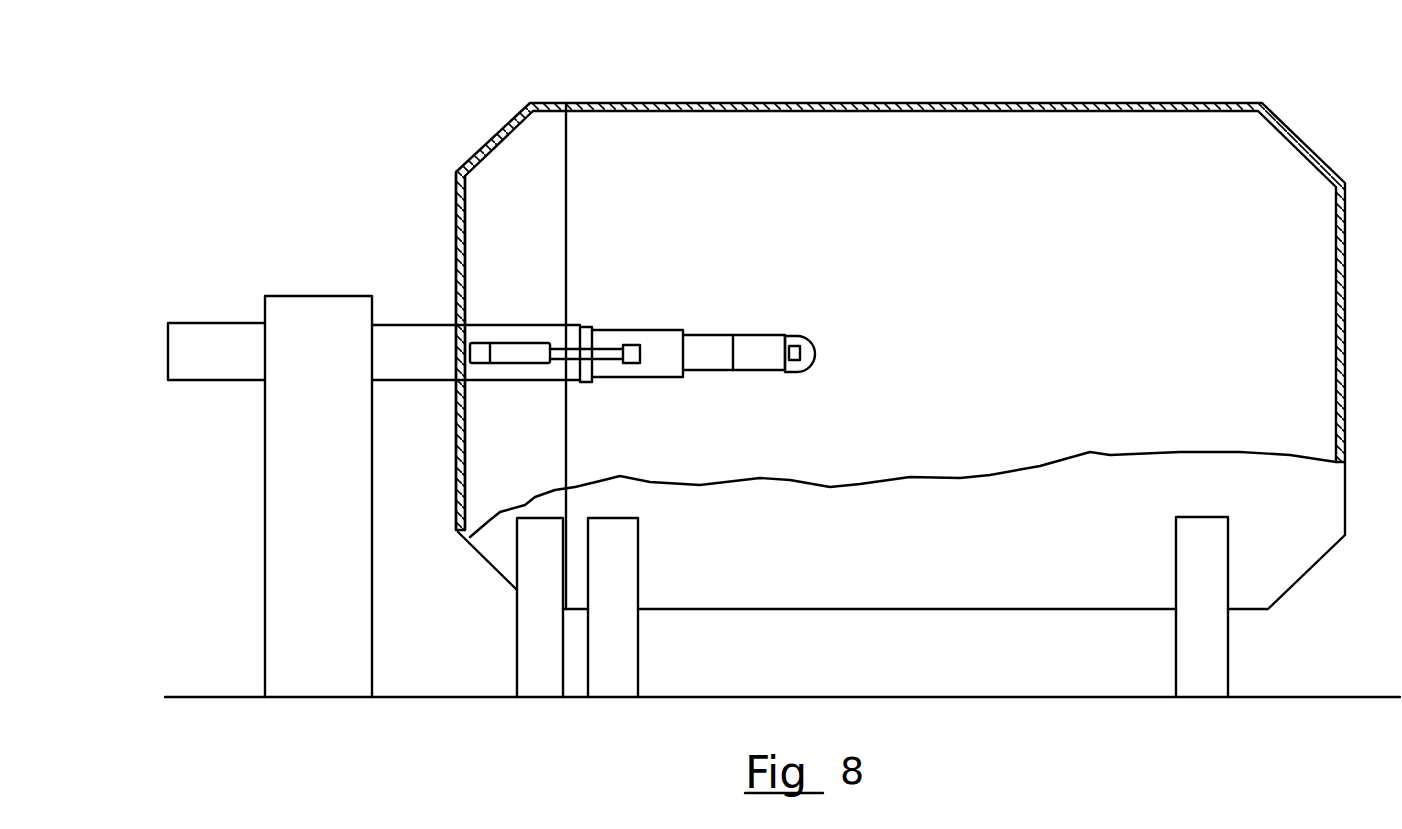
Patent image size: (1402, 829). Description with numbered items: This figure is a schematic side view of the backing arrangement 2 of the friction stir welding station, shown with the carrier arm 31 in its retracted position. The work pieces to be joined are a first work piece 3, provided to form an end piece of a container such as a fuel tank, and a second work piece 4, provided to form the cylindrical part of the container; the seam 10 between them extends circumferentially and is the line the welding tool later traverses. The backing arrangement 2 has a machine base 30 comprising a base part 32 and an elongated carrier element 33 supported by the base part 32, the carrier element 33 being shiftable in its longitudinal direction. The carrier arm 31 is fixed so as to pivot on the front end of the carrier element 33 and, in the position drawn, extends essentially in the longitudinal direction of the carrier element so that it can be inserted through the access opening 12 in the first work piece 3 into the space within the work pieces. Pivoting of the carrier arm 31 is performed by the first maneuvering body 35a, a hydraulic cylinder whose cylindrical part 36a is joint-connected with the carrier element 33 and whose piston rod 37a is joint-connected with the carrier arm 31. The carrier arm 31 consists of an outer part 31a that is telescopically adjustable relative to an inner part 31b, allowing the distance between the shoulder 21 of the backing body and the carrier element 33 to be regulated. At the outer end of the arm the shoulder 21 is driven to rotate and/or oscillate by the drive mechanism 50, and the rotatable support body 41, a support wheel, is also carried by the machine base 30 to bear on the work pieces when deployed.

The backing arrangement 2 is at (671, 333).
The first work piece 3 is at (548, 102).
The second work piece 4 is at (623, 101).
The seam 10 is at (571, 158).
The access opening 12 is at (460, 420).
The shoulder 21 is at (806, 352).
The machine base 30 is at (520, 449).
The carrier arm 31 is at (732, 348).
The outer part of carrier arm 31a is at (711, 372).
The inner part of carrier arm 31b is at (668, 380).
The base part 32 is at (324, 298).
The carrier element 33 is at (417, 380).
The first maneuvering body 35a is at (558, 351).
The cylindrical part 36a is at (518, 370).
The piston rod 37a is at (610, 370).
The support body 41 is at (798, 337).
The drive mechanism 50 is at (764, 371).